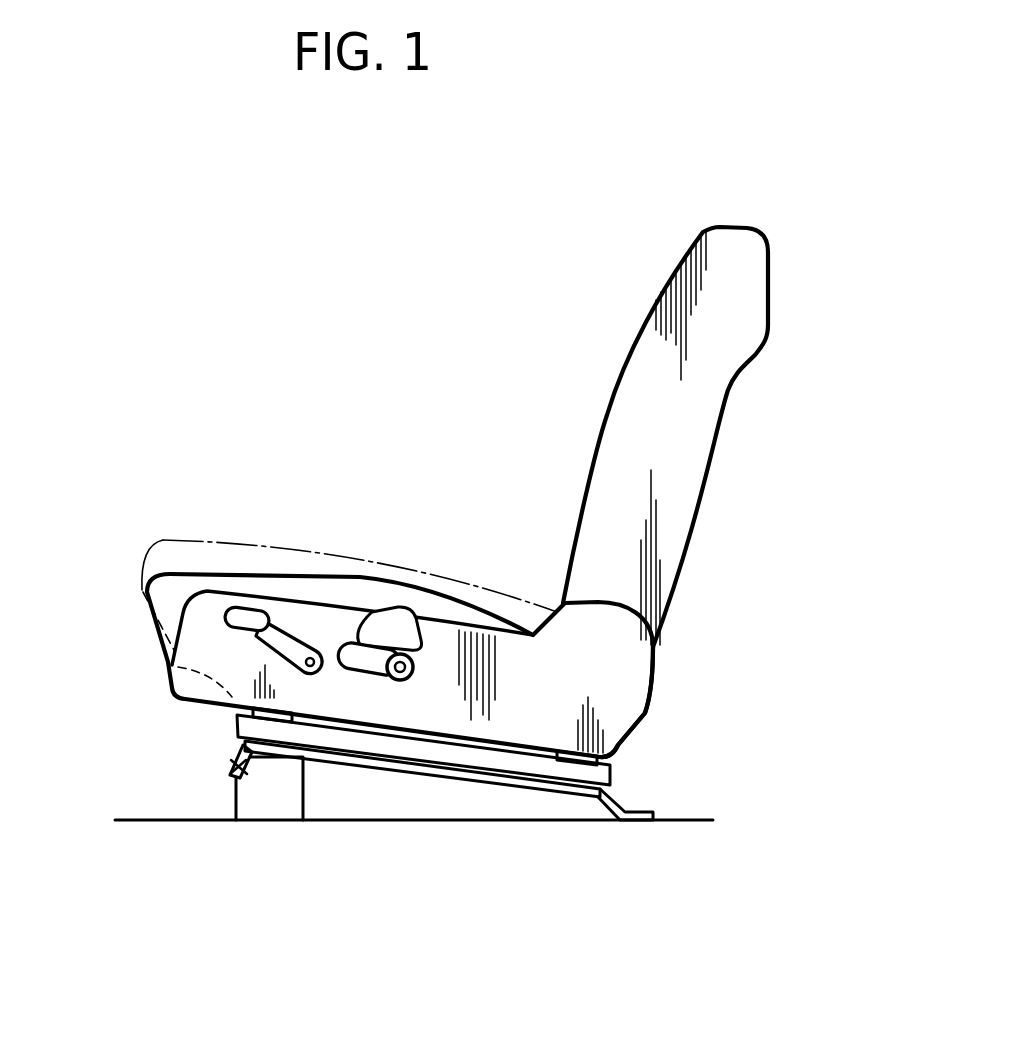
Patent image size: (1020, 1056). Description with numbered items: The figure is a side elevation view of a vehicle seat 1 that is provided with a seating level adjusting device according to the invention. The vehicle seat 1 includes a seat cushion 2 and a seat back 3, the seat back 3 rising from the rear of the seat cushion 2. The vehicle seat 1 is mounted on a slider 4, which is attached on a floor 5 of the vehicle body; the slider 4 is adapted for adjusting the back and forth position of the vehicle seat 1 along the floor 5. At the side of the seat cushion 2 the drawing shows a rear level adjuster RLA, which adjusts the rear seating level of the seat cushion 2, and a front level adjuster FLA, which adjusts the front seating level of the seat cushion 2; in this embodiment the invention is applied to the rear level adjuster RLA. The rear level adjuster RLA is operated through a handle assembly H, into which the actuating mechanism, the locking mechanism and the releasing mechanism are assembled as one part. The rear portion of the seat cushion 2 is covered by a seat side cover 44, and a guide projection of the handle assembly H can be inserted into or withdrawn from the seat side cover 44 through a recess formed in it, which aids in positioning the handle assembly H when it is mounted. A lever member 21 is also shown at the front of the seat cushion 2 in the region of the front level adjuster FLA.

The vehicle seat 1 is at (501, 492).
The seat cushion 2 is at (344, 570).
The seat back 3 is at (727, 405).
The slider 4 is at (440, 752).
The floor 5 is at (687, 819).
The front link lever 21 is at (225, 617).
The seat side cover 44 is at (627, 728).
The front level adjuster FLA is at (249, 592).
The rear level adjuster RLA is at (416, 630).
The handle assembly H is at (352, 688).